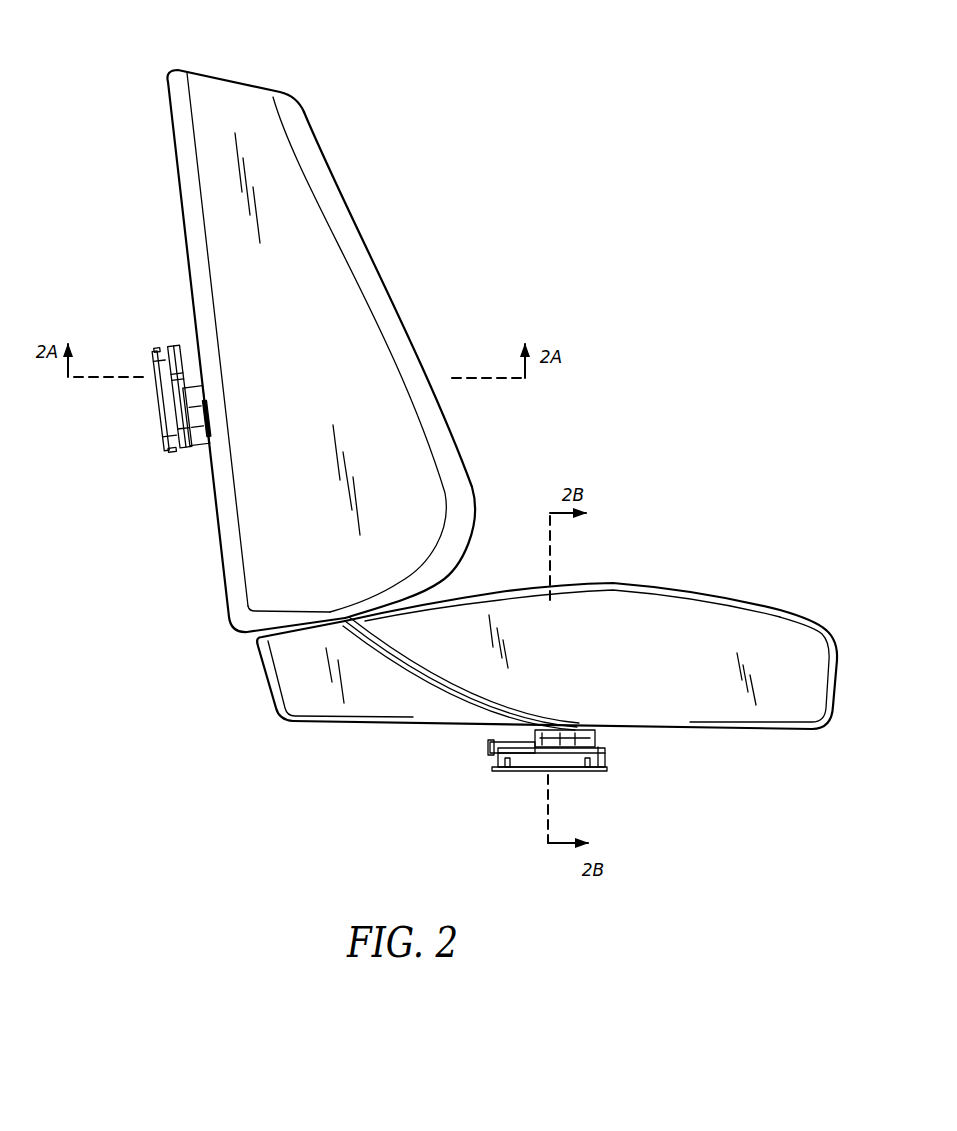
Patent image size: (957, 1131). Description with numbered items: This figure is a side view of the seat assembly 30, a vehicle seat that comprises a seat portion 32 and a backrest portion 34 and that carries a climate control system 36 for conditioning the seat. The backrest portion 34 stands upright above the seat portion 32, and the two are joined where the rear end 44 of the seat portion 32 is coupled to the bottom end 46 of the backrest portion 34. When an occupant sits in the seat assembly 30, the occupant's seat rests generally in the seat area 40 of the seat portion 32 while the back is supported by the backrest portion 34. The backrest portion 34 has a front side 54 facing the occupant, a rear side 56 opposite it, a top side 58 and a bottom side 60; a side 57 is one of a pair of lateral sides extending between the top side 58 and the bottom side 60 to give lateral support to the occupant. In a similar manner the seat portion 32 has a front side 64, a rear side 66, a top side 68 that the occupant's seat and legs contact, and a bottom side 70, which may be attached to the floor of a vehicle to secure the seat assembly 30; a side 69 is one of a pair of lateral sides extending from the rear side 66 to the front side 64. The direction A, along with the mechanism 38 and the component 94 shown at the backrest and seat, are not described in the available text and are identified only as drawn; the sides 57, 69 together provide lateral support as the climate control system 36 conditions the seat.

The seat assembly 30 is at (392, 65).
The seat portion 32 is at (632, 560).
The backrest portion 34 is at (377, 218).
The climate control system 36 is at (190, 488).
The recliner assembly 38 is at (143, 460).
The seat area 40 is at (153, 230).
The rear end 44 is at (343, 633).
The bottom end 46 is at (320, 620).
The front side 54 is at (467, 420).
The rear side 56 is at (153, 308).
The side 57 is at (290, 195).
The top side 58 is at (248, 55).
The bottom side 60 is at (242, 638).
The front side 64 is at (838, 675).
The rear side 66 is at (260, 707).
The top side 68 is at (533, 580).
The side 69 is at (655, 623).
The bottom side 70 is at (668, 737).
The recliner mechanism 94 is at (157, 428).
The forward direction arrow A is at (153, 582).